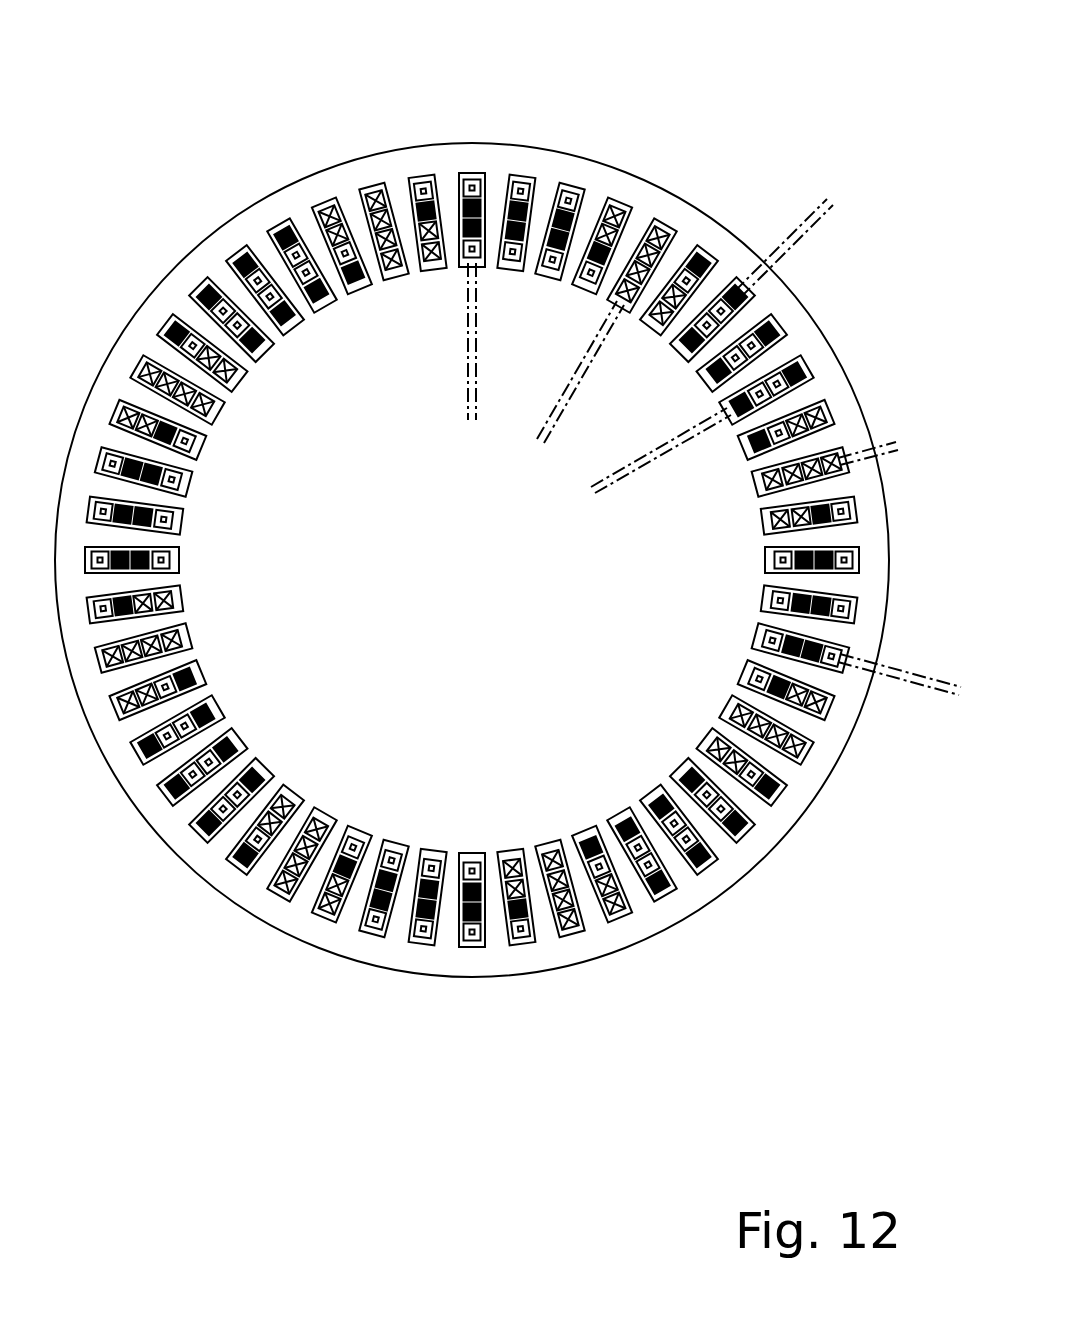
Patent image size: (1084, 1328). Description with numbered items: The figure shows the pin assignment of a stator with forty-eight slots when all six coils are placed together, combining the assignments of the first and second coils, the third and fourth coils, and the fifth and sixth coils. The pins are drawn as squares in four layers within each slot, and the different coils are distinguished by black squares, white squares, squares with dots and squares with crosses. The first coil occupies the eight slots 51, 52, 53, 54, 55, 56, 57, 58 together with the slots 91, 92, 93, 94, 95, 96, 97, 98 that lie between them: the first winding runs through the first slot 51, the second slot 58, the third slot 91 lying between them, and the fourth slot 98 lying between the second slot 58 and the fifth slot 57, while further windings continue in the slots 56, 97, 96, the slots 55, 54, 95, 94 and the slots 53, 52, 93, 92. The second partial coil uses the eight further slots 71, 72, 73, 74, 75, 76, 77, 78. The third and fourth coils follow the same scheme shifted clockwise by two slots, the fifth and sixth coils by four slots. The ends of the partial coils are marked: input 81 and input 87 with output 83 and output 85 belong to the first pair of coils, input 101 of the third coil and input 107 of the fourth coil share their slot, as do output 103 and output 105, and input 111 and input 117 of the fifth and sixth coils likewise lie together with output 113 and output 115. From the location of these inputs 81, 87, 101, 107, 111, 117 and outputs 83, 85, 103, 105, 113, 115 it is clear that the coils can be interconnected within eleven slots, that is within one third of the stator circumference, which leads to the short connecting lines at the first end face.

The first slot 51 is at (472, 168).
The slot 52 is at (749, 283).
The slot 53 is at (860, 580).
The slot 54 is at (749, 837).
The slot 55 is at (472, 952).
The slot 56 is at (195, 837).
The fifth slot 57 is at (87, 580).
The second slot 58 is at (195, 283).
The slot 71 is at (523, 171).
The slot 72 is at (828, 205).
The slot 73 is at (822, 627).
The slot 74 is at (711, 871).
The slot 75 is at (421, 949).
The slot 76 is at (161, 799).
The slot 77 is at (100, 492).
The slot 78 is at (233, 249).
The input 81 is at (468, 326).
The output 83 is at (783, 321).
The output 85 is at (790, 243).
The input 87 is at (477, 355).
The third slot 91 is at (421, 171).
The slot 92 is at (711, 249).
The slot 93 is at (842, 482).
The slot 94 is at (783, 799).
The slot 95 is at (523, 949).
The slot 96 is at (233, 871).
The slot 97 is at (123, 627).
The fourth slot 98 is at (161, 321).
The input 101 is at (593, 497).
The output 103 is at (898, 688).
The output 105 is at (905, 678).
The input 107 is at (615, 482).
The input 111 is at (540, 432).
The output 113 is at (838, 492).
The output 115 is at (839, 462).
The input 117 is at (543, 445).